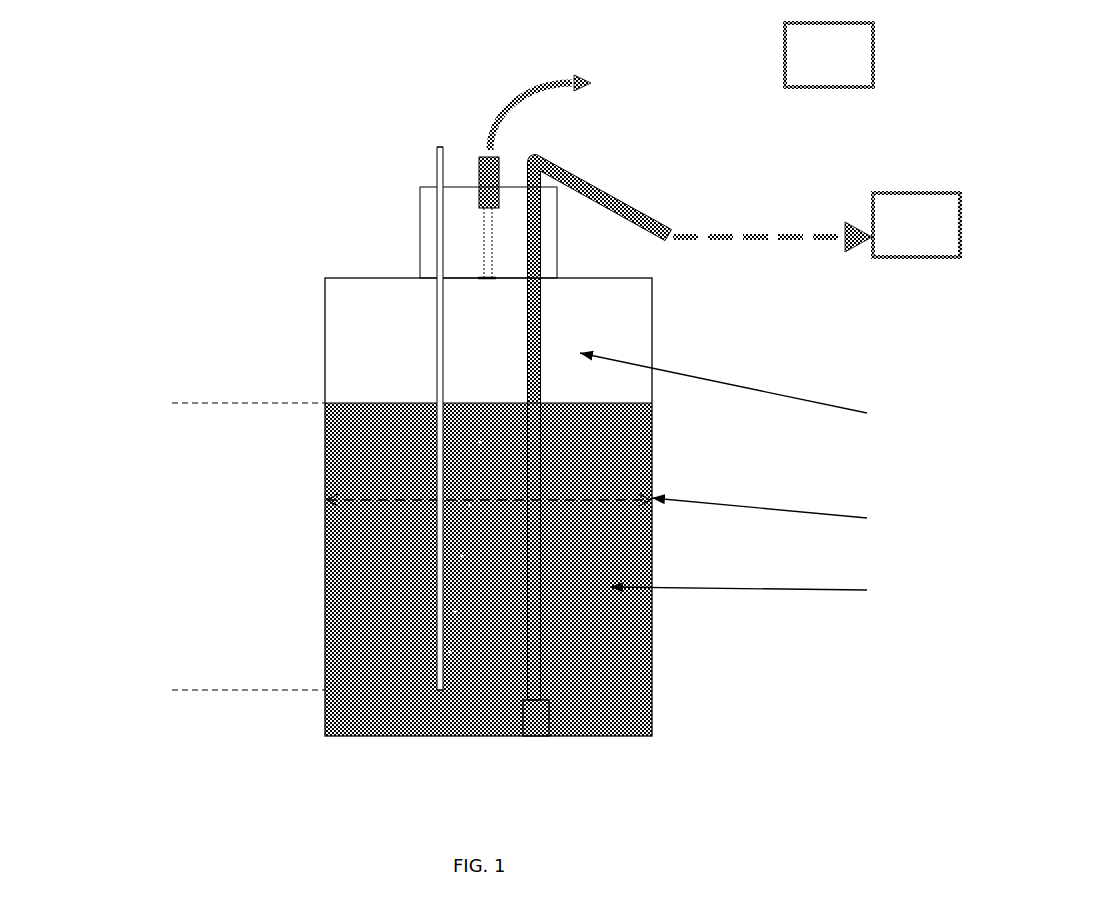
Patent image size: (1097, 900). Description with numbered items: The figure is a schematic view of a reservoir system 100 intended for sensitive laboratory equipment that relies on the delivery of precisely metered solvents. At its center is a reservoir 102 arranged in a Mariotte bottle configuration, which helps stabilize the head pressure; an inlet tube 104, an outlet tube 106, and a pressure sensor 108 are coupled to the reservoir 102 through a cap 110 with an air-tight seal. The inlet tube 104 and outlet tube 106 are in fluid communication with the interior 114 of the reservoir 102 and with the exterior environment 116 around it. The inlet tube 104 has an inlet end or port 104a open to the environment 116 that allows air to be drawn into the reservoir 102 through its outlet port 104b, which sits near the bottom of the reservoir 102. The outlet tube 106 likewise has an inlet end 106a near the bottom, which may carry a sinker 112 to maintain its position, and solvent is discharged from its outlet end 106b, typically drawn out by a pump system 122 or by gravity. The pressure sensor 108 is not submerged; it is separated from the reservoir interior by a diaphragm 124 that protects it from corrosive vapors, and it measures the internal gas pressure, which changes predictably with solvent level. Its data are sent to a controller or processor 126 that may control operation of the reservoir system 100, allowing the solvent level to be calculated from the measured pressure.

The reservoir system 100 is at (145, 127).
The reservoir 102 is at (652, 310).
The inlet tube 104 is at (437, 188).
The inlet end or port 104a is at (438, 148).
The outlet port 104b is at (436, 693).
The outlet tube 106 is at (536, 157).
The inlet end 106a is at (540, 702).
The outlet end 106b is at (672, 236).
The pressure sensor 108 is at (482, 153).
The cap 110 is at (418, 208).
The sinker 112 is at (546, 728).
The interior 114 is at (390, 350).
The exterior environment 116 is at (150, 260).
The pump system 122 is at (916, 225).
The diaphragm 124 is at (490, 278).
The controller or processor 126 is at (829, 55).